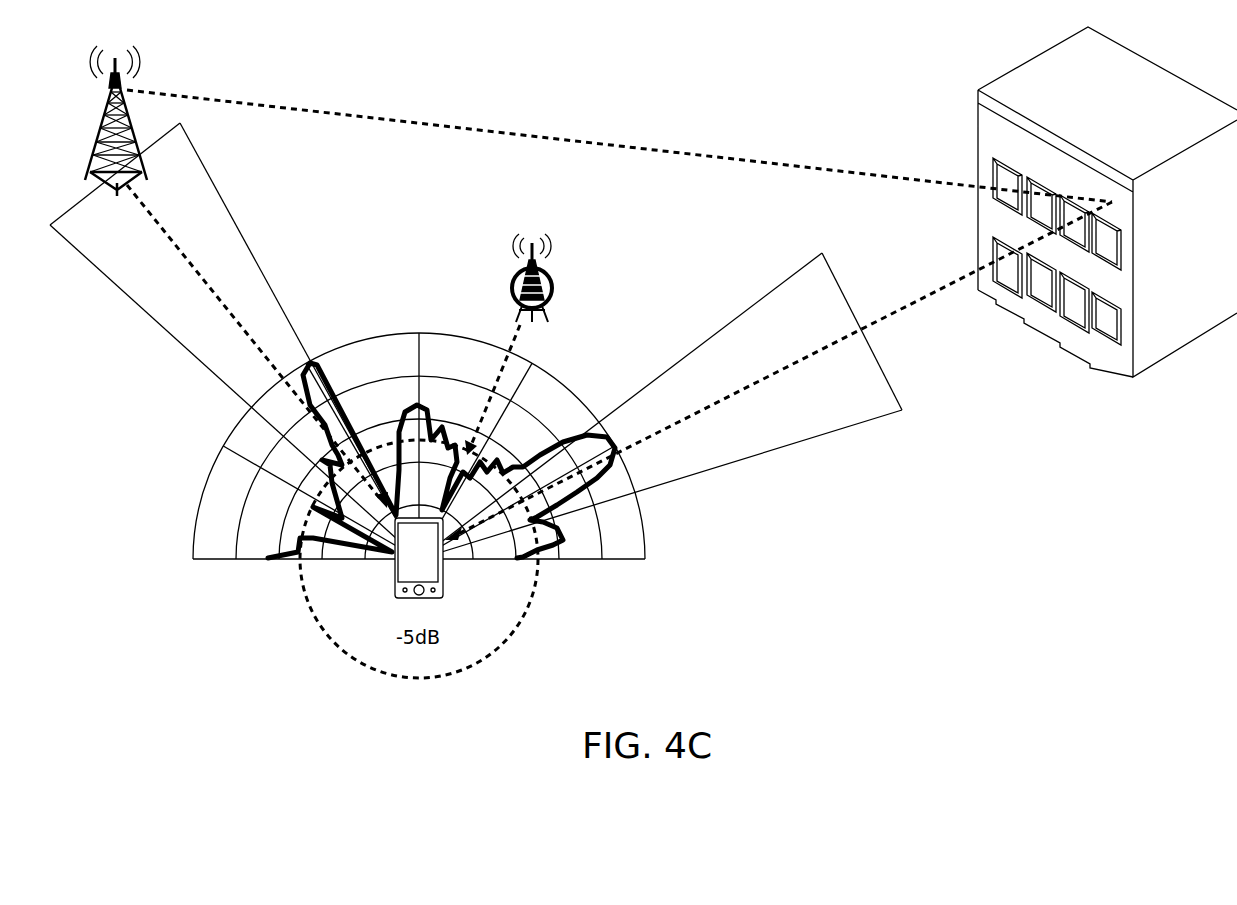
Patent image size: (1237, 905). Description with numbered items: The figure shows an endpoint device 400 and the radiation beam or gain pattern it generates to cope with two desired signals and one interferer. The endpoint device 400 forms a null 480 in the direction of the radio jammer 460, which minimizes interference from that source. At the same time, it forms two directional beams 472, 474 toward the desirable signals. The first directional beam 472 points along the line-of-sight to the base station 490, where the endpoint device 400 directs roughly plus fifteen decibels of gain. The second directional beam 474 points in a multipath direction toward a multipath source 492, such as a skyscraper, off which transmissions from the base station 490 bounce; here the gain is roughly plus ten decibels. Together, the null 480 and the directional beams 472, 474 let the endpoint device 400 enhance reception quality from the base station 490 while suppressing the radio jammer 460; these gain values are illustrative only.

The endpoint device 400 is at (402, 566).
The radio jammer 460 is at (540, 258).
The directional beam 472 is at (97, 241).
The directional beam 474 is at (775, 321).
The null 480 is at (467, 453).
The base station 490 is at (108, 104).
The multipath source 492 is at (1080, 108).